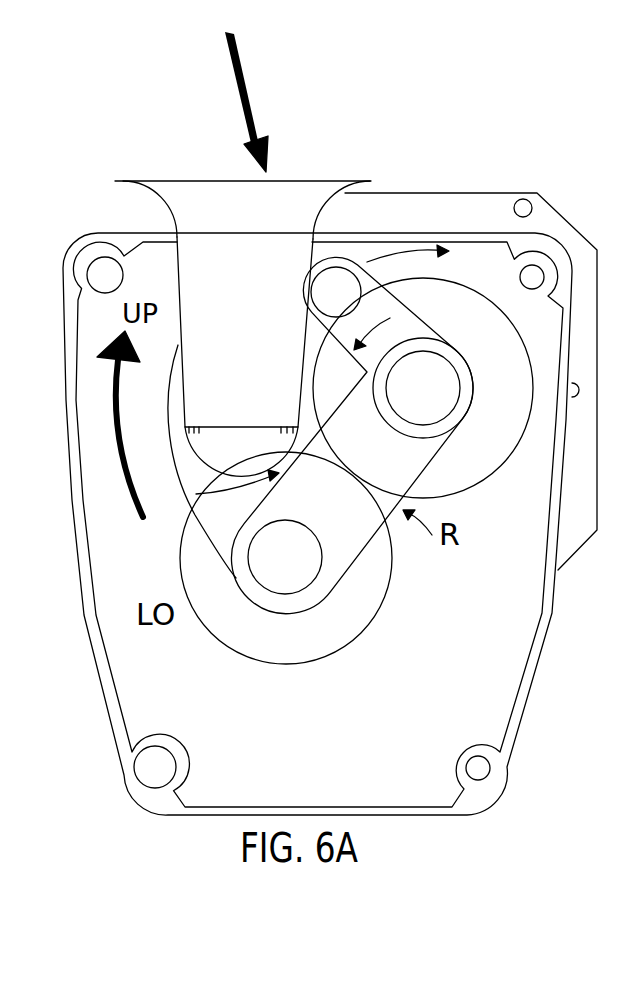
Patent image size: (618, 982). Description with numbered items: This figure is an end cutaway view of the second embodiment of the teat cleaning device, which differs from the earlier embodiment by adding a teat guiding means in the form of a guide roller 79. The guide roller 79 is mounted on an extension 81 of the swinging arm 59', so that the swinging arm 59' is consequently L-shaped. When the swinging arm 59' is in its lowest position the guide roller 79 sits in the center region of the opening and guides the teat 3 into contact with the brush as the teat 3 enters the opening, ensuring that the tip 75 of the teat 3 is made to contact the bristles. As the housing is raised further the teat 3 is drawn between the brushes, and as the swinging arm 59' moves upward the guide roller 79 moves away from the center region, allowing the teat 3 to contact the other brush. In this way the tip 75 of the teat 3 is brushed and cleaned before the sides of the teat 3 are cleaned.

The teat 3 is at (294, 195).
The tip 75 is at (247, 447).
The guide roller 79 is at (332, 290).
The extension 81 is at (427, 326).
The swinging arm 59' is at (433, 405).